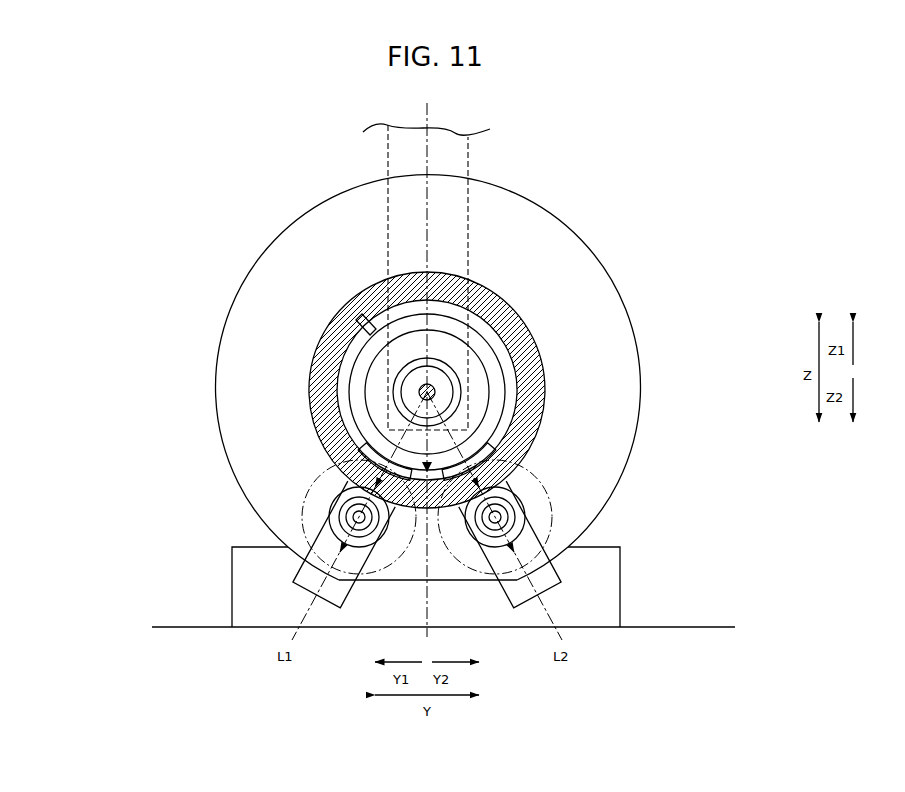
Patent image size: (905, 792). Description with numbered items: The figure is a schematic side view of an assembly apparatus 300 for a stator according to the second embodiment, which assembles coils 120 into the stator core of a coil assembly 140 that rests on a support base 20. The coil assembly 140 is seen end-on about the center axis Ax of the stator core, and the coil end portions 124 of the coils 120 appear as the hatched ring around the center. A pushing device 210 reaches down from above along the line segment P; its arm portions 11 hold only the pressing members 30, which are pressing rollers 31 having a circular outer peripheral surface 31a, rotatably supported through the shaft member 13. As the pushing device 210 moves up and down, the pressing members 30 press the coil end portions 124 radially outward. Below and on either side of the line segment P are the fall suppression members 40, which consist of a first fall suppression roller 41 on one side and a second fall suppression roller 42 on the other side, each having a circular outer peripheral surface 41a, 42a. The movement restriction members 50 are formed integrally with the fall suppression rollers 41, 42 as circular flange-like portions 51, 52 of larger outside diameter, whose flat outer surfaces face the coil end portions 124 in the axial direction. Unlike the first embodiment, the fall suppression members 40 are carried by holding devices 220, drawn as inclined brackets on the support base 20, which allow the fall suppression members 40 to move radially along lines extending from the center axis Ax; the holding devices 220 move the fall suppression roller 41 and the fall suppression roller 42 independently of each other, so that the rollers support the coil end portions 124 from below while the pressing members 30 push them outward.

The assembly apparatus 300 is at (332, 367).
The coil assembly 140 is at (242, 265).
The outer peripheral surface 31a is at (356, 322).
The pressing member 30 is at (356, 346).
The pressing roller 31 is at (265, 392).
The shaft member 13 is at (421, 388).
The flange-like portion 51 is at (318, 481).
The flange-like portion 52 is at (525, 482).
The movement restriction member 50 is at (406, 462).
The fall suppression roller 41 is at (330, 521).
The fall suppression roller 42 is at (525, 520).
The fall suppression member 40 is at (406, 517).
The outer peripheral surface 41a is at (340, 550).
The outer peripheral surface 42a is at (515, 550).
The holding device 220 is at (312, 567).
The arm portion 11 is at (470, 190).
The pushing device 210 is at (560, 179).
The coil 120 is at (505, 285).
The coil end portion 124 is at (521, 377).
The support base 20 is at (620, 592).
The line segment P is at (430, 146).
The center axis Ax is at (436, 381).